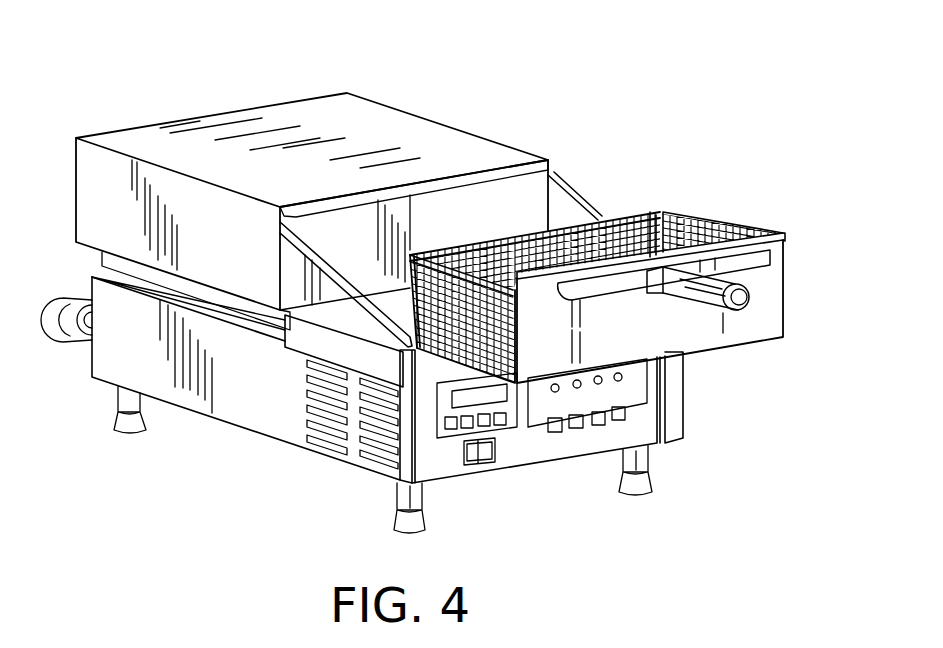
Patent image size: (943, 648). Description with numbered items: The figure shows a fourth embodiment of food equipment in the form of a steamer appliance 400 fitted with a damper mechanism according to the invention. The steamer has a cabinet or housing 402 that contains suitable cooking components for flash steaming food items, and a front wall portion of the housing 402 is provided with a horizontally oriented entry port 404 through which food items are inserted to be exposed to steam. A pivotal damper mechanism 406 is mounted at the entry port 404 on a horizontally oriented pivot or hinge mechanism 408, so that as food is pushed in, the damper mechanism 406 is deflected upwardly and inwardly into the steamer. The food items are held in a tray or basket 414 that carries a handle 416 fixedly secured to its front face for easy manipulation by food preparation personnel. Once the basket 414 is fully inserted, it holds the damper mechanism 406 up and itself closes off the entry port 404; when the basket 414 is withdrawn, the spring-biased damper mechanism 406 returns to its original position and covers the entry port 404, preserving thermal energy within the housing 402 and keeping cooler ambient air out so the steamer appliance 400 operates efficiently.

The steamer appliance 400 is at (630, 122).
The cabinet or housing 402 is at (123, 140).
The entry port 404 is at (382, 313).
The damper mechanism 406 is at (505, 207).
The pivot or hinge mechanism 408 is at (440, 180).
The tray or basket 414 is at (690, 330).
The handle 416 is at (749, 297).